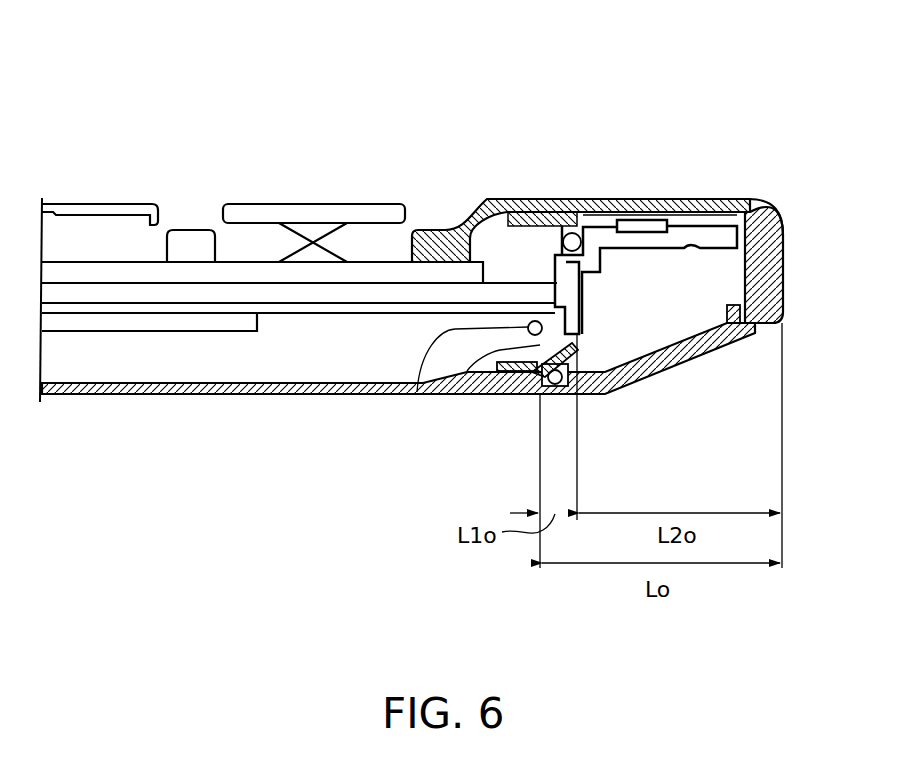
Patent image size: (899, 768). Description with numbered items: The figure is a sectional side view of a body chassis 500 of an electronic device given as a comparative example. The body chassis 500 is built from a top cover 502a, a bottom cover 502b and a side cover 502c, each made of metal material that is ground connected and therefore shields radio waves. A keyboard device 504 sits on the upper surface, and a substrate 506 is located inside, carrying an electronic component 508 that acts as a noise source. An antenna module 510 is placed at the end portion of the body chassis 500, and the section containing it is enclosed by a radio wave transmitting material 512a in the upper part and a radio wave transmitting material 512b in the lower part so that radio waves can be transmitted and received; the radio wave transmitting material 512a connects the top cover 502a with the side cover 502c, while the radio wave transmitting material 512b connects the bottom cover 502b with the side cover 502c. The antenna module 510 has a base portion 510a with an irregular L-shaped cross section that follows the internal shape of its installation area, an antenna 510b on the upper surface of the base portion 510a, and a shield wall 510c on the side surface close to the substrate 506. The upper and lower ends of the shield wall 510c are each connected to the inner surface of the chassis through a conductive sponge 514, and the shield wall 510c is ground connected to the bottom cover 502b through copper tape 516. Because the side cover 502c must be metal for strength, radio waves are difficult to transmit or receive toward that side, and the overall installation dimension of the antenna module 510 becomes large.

The body chassis 500 is at (602, 112).
The top cover 502a is at (475, 198).
The bottom cover 502b is at (473, 395).
The side cover 502c is at (768, 200).
The keyboard device 504 is at (315, 200).
The substrate 506 is at (345, 308).
The electronic component 508 is at (218, 322).
The antenna module 510 is at (715, 262).
The base portion 510a is at (643, 248).
The antenna 510b is at (640, 219).
The shield wall 510c is at (560, 270).
The radio wave transmitting material 512a is at (685, 210).
The radio wave transmitting material 512b is at (736, 330).
The conductive sponge 514 is at (573, 232).
The copper tape 516 is at (500, 395).